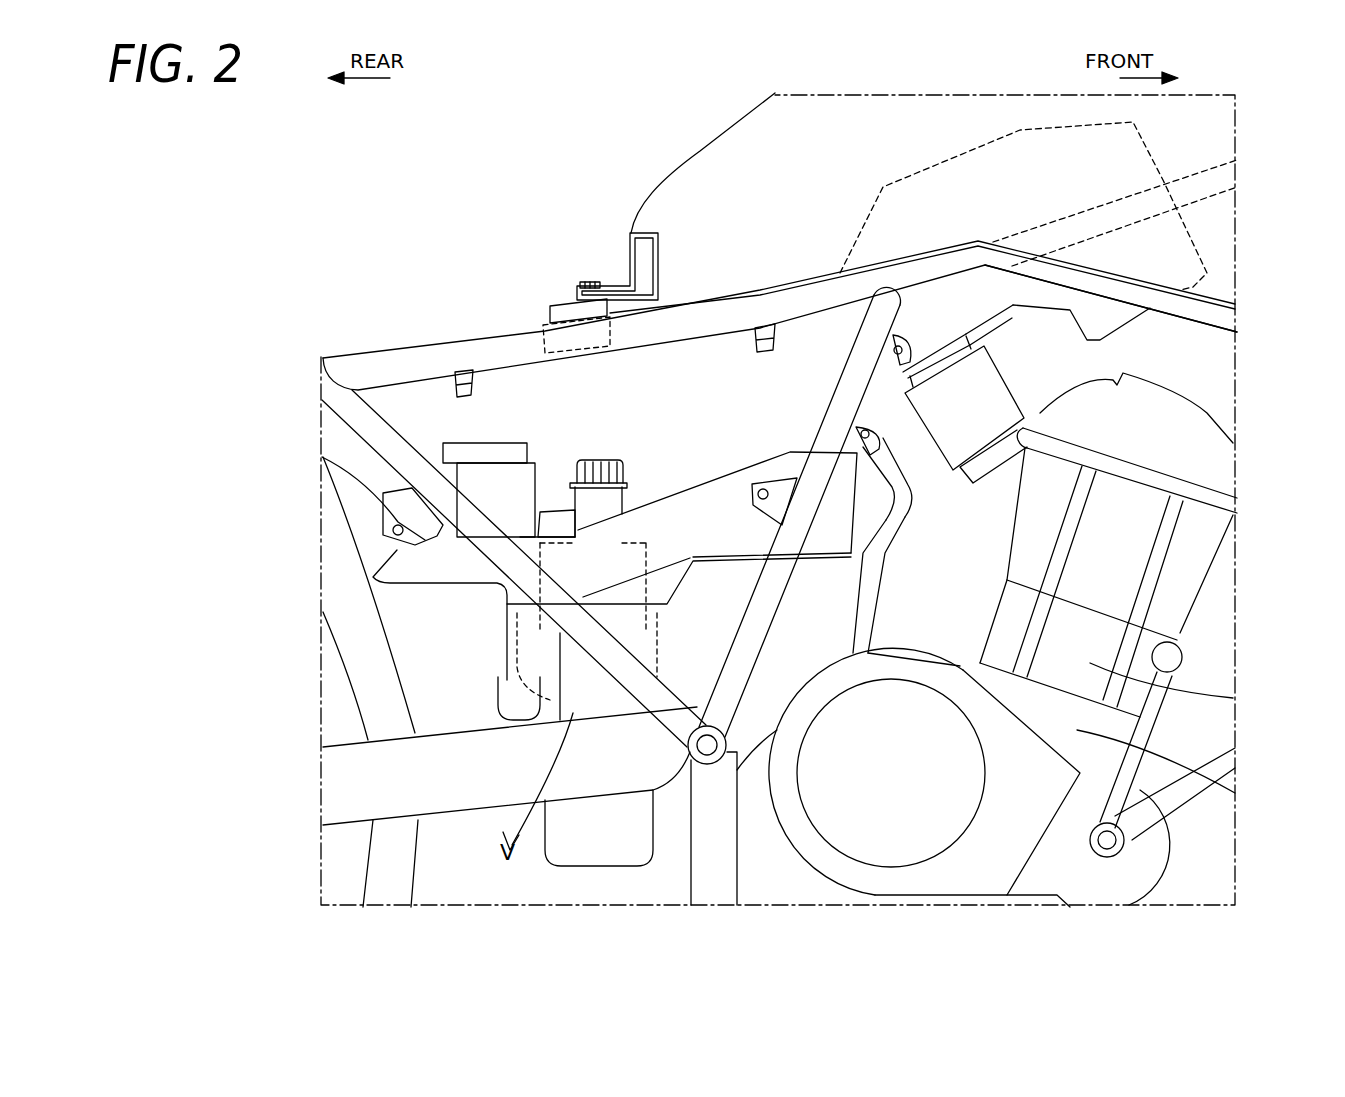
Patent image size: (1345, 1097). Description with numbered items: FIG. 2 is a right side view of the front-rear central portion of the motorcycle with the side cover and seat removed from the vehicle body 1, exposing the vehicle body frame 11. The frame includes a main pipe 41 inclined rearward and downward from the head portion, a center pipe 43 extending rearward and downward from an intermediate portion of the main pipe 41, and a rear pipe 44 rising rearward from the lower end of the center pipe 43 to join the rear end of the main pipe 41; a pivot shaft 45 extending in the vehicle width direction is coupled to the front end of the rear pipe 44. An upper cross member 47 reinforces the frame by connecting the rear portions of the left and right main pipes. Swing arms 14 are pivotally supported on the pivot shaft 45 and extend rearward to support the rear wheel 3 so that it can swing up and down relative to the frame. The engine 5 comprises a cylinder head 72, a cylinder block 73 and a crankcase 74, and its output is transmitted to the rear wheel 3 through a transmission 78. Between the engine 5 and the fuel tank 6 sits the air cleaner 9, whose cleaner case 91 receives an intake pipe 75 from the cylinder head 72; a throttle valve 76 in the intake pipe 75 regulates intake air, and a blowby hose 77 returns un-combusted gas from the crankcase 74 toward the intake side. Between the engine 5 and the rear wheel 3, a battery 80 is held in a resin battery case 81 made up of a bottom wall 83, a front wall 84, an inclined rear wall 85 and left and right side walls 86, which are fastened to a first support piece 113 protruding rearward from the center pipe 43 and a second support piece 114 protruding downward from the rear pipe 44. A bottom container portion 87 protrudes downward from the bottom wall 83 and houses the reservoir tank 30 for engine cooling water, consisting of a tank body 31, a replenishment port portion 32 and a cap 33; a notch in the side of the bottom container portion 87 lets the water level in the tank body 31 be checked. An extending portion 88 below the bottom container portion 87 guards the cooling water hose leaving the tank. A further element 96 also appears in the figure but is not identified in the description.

The vehicle body 1 is at (455, 275).
The rear wheel 3 is at (405, 850).
The engine 5 is at (1222, 608).
The fuel tank 6 is at (698, 172).
The air cleaner 9 is at (1167, 140).
The vehicle body frame 11 is at (1255, 288).
The swing arms 14 is at (473, 787).
The reservoir tank 30 is at (636, 532).
The tank body 31 is at (500, 645).
The replenishment port portion 32 is at (580, 503).
The cap 33 is at (606, 462).
The main pipe 41 is at (935, 270).
The center pipe 43 is at (852, 408).
The rear pipe 44 is at (392, 440).
The pivot shaft 45 is at (688, 760).
The upper cross member 47 is at (567, 303).
The cylinder head 72 is at (1197, 548).
The cylinder block 73 is at (1093, 663).
The crankcase 74 is at (1075, 738).
The intake pipe 75 is at (997, 483).
The throttle valve 76 is at (985, 380).
The blowby hose 77 is at (865, 620).
The transmission 78 is at (835, 863).
The battery 80 is at (500, 472).
The battery case 81 is at (872, 572).
The bottom wall 83 is at (826, 563).
The front wall 84 is at (887, 497).
The rear wall 85 is at (333, 503).
The side walls 86 is at (702, 503).
The bottom container portion 87 is at (500, 690).
The extending portion 88 is at (597, 850).
The cleaner case 91 is at (1117, 317).
The seat bracket 96 is at (622, 290).
The first support piece 113 is at (777, 490).
The second support piece 114 is at (397, 550).